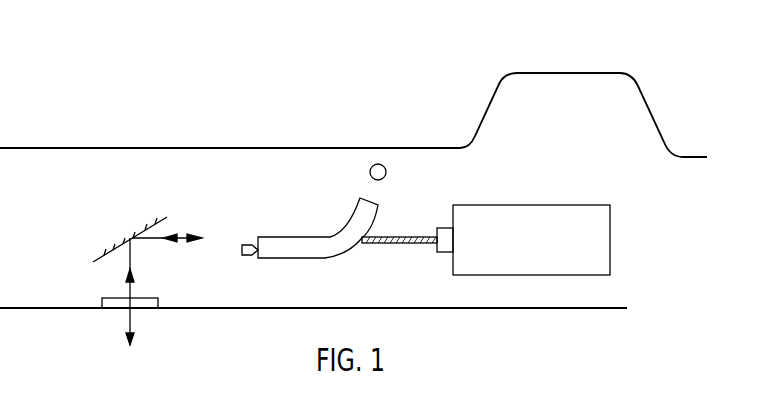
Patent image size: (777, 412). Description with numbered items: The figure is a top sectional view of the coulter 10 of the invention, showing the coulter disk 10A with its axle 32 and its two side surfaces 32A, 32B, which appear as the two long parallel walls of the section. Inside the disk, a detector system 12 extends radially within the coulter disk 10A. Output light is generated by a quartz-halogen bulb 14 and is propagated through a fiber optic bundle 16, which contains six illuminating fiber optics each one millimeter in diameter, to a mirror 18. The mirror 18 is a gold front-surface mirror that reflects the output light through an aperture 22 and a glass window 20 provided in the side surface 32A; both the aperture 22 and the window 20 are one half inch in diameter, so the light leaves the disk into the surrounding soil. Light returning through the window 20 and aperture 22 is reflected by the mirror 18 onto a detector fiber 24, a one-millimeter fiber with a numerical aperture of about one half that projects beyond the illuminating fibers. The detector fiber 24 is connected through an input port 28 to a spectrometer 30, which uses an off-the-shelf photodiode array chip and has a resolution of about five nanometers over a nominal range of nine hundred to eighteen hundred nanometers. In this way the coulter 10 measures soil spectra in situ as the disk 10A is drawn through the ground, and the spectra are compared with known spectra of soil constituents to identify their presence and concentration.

The coulter 10 is at (328, 124).
The coulter disk 10A is at (201, 119).
The detector system 12 is at (285, 190).
The quartz-halogen bulb 14 is at (386, 168).
The fiber optic bundle 16 is at (302, 247).
The mirror 18 is at (145, 228).
The glass window 20 is at (154, 298).
The aperture 22 is at (142, 319).
The detector fiber 24 is at (247, 245).
The input port 28 is at (447, 252).
The spectrometer 30 is at (540, 255).
The axle 32 is at (657, 103).
The side surface 32A is at (60, 308).
The side surface 32B is at (100, 148).